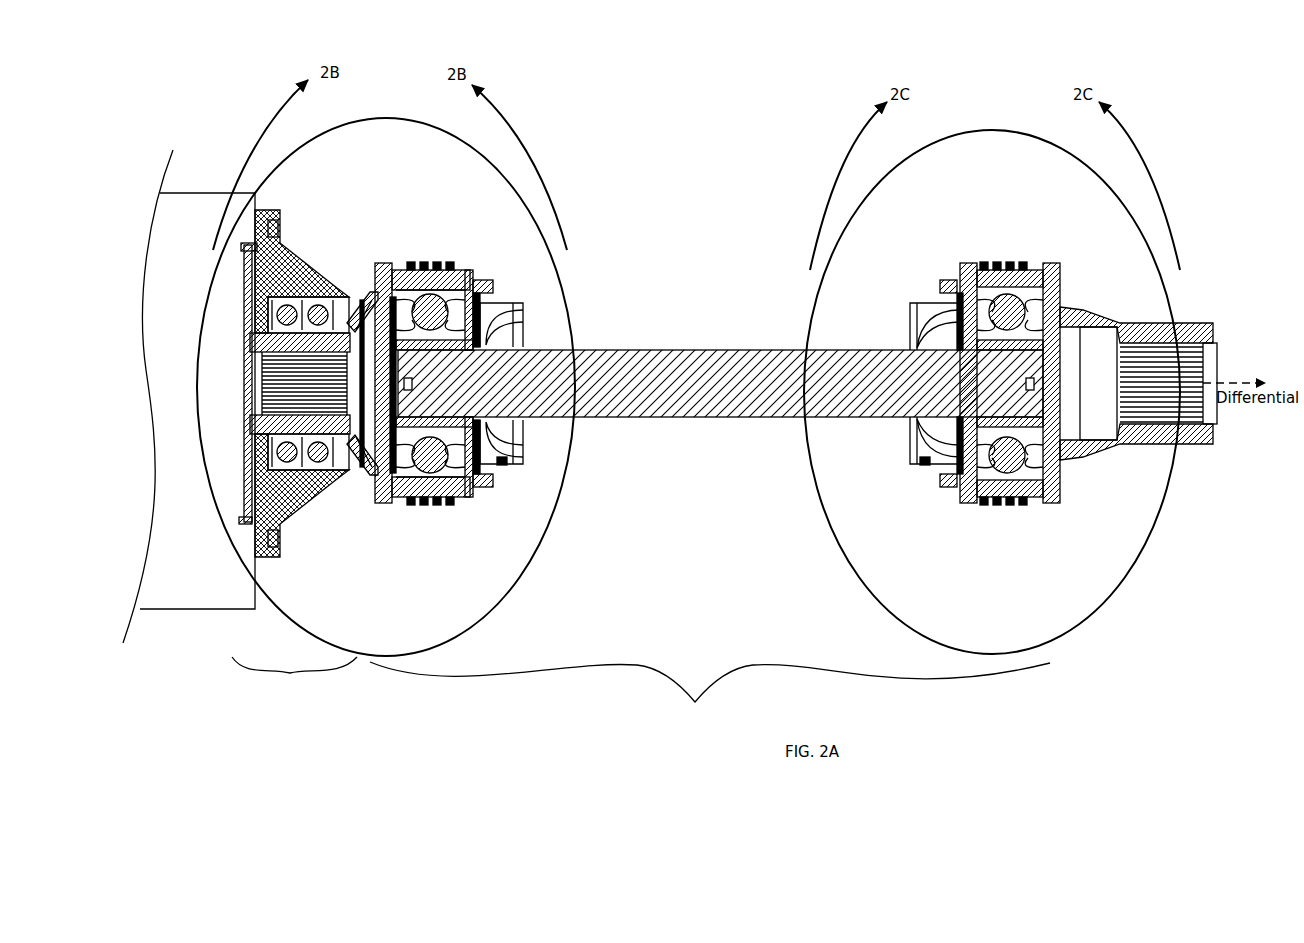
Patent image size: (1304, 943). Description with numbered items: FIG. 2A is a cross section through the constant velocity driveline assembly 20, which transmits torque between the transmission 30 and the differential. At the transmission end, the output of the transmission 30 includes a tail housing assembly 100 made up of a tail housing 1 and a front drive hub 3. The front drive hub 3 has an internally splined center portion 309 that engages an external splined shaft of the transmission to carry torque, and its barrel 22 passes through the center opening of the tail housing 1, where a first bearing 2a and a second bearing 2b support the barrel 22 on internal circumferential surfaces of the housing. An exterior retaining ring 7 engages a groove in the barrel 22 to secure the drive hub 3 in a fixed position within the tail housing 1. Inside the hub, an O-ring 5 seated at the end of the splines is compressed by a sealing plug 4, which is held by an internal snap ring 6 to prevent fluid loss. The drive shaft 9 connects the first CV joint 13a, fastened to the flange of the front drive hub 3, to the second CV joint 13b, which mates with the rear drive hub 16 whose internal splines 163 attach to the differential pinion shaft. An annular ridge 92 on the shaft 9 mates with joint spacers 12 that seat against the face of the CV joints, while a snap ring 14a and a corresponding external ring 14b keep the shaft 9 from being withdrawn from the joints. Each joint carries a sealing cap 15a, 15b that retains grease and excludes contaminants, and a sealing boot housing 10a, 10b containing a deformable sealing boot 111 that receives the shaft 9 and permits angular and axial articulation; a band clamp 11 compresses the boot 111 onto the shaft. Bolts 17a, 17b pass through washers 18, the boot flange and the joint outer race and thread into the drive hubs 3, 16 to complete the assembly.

The tail housing 1 is at (293, 266).
The first bearing 2a is at (343, 500).
The second bearing 2b is at (320, 490).
The front drive hub 3 is at (380, 262).
The sealing plug 4 is at (392, 500).
The O-ring 5 is at (350, 318).
The internal snap ring 6 is at (362, 328).
The exterior retaining ring 7 is at (240, 300).
The drive shaft 9 is at (686, 350).
The sealing boot housing 10a is at (520, 301).
The sealing boot housing 10b is at (913, 301).
The band clamp 11 is at (540, 338).
The joint spacer 12 is at (460, 500).
The first CV joint 13a is at (432, 268).
The second CV joint 13b is at (1000, 268).
The snap ring 14a is at (432, 500).
The external ring 14b is at (1012, 506).
The sealing cap 15a is at (385, 503).
The sealing cap 15b is at (1050, 262).
The rear drive hub 16 is at (1113, 320).
The bolt 17a is at (485, 278).
The bolt 17b is at (946, 278).
The washer 18 is at (480, 492).
The constant velocity driveline assembly 20 is at (710, 694).
The barrel 22 is at (320, 262).
The transmission 30 is at (184, 582).
The annular ridge 92 is at (505, 432).
The tail housing assembly 100 is at (294, 681).
The sealing boot 111 is at (505, 467).
The internal splines 163 is at (1152, 323).
The internally splined center portion 309 is at (283, 556).